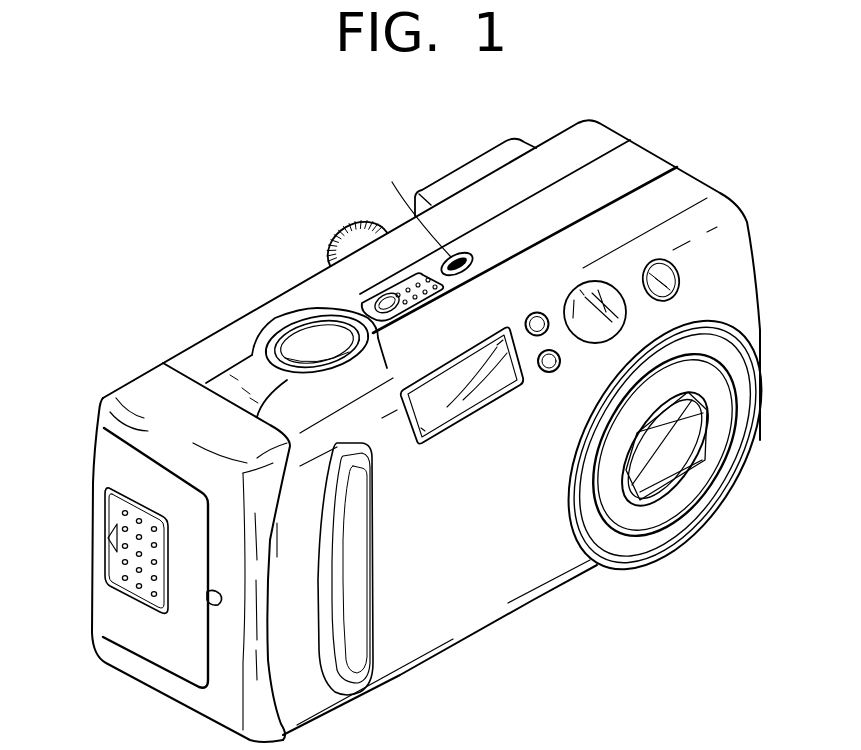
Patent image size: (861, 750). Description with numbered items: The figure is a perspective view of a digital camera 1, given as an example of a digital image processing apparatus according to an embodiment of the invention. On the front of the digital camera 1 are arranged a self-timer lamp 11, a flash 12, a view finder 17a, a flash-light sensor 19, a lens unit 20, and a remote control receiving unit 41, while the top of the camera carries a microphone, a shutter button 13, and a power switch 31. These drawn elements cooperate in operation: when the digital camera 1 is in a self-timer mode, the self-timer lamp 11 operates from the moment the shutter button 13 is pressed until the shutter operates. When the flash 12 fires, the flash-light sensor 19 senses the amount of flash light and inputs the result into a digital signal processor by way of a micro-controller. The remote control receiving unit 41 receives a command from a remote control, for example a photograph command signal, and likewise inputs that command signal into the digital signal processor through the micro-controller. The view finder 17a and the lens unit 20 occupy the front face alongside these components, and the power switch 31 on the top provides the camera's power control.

The digital camera 1 is at (137, 270).
The self-timer lamp 11 is at (659, 260).
The flash 12 is at (442, 393).
The shutter button 13 is at (305, 337).
The view finder 17a is at (595, 298).
The flash-light sensor 19 is at (548, 326).
The lens unit 20 is at (672, 448).
The power switch 31 is at (396, 286).
The remote control receiving unit 41 is at (560, 362).